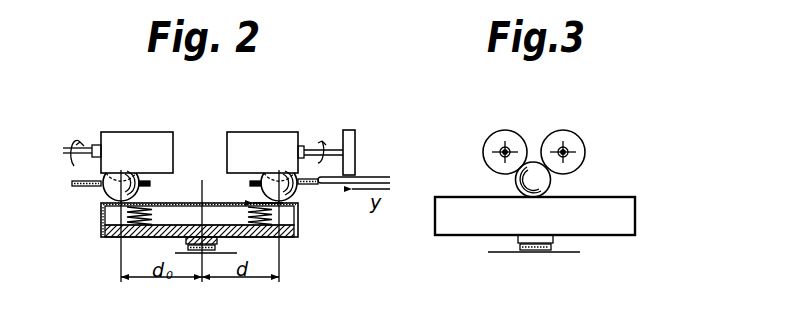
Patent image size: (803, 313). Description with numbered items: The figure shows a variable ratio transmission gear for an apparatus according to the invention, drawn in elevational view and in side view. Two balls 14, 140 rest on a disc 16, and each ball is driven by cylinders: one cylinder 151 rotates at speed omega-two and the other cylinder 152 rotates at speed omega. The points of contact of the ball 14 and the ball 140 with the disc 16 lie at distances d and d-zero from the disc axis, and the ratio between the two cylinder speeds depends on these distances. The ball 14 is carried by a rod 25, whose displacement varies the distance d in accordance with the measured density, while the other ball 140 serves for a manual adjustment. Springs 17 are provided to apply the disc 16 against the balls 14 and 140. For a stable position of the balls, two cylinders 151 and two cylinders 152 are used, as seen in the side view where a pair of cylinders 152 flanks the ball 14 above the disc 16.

In FIG. 2, the cylinder 151 is at (147, 143).
In FIG. 2, the cylinder 152 is at (268, 142).
In FIG. 3, the cylinder 152 is at (517, 133).
In FIG. 2, the ball 140 is at (112, 185).
In FIG. 2, the ball 14 is at (352, 137).
In FIG. 3, the ball 14 is at (553, 183).
In FIG. 2, the disc 16 is at (193, 202).
In FIG. 3, the disc 16 is at (612, 210).
In FIG. 2, the springs 17 is at (148, 222).
In FIG. 2, the rod 25 is at (367, 182).